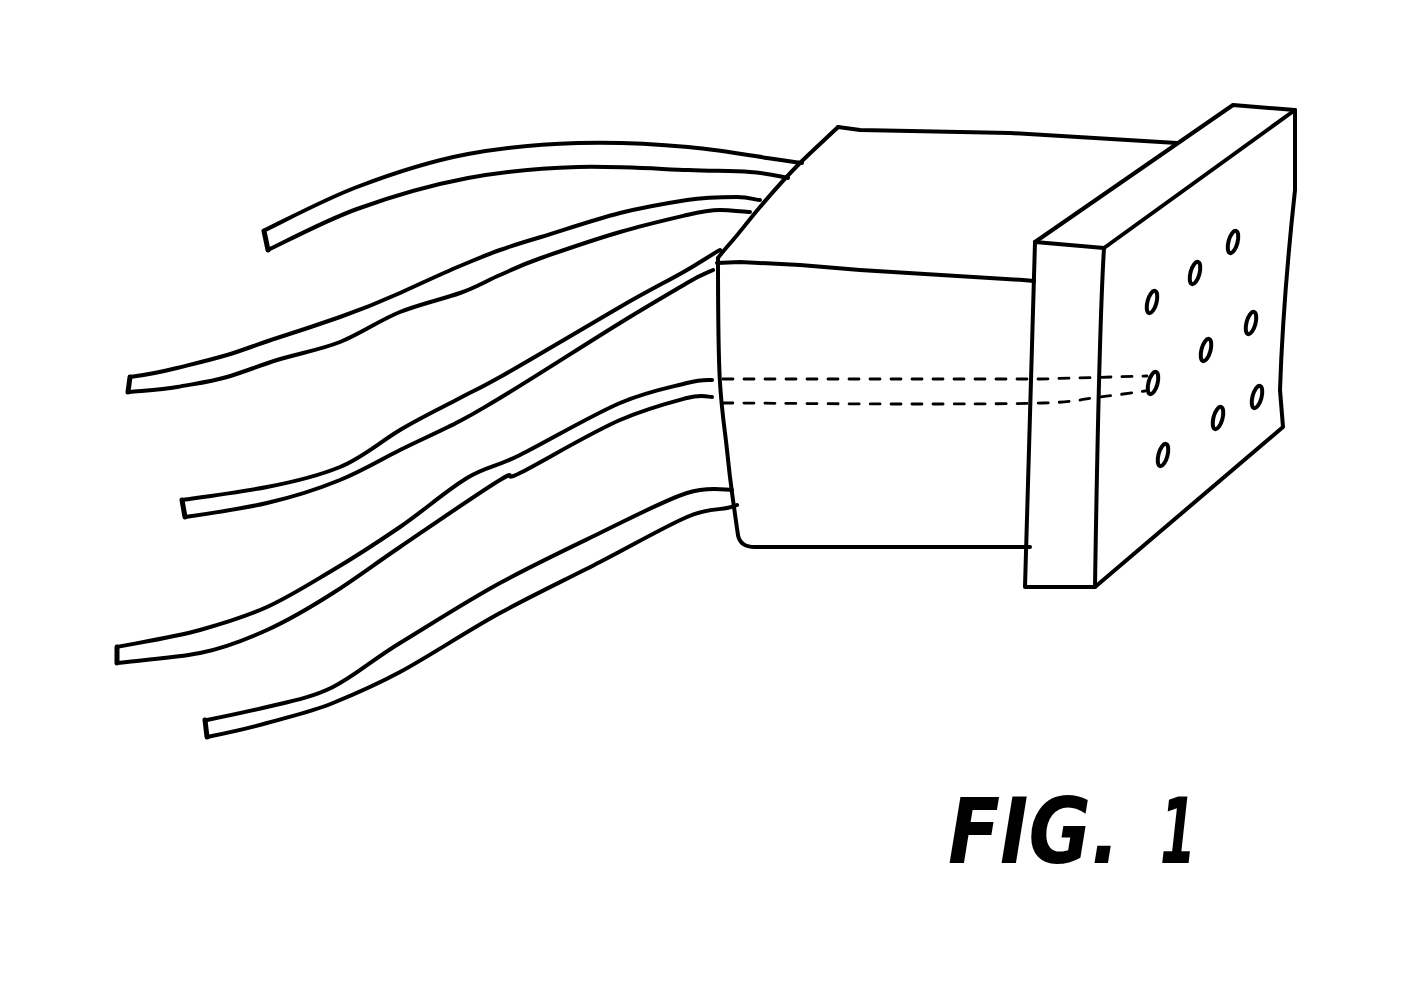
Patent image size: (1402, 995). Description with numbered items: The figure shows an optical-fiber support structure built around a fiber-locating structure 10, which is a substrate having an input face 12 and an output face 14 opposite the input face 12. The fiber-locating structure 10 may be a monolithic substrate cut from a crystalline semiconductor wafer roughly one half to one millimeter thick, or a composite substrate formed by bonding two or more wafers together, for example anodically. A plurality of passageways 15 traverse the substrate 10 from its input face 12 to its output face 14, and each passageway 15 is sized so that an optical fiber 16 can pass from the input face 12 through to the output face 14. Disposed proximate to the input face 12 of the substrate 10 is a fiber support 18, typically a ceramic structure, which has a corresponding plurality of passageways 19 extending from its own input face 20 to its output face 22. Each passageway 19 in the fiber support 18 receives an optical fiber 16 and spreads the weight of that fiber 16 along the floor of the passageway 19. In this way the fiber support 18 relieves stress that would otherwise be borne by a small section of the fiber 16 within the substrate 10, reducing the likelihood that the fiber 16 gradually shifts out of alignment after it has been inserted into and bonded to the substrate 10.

The fiber-locating structure 10 is at (1270, 102).
The input face 12 is at (1207, 123).
The output face 14 is at (1277, 172).
The passageway 15 is at (1068, 400).
The optical fiber 16 is at (577, 142).
The fiber support 18 is at (858, 549).
The passageway 19 is at (867, 401).
The input face 20 is at (733, 530).
The output face 22 is at (1178, 143).